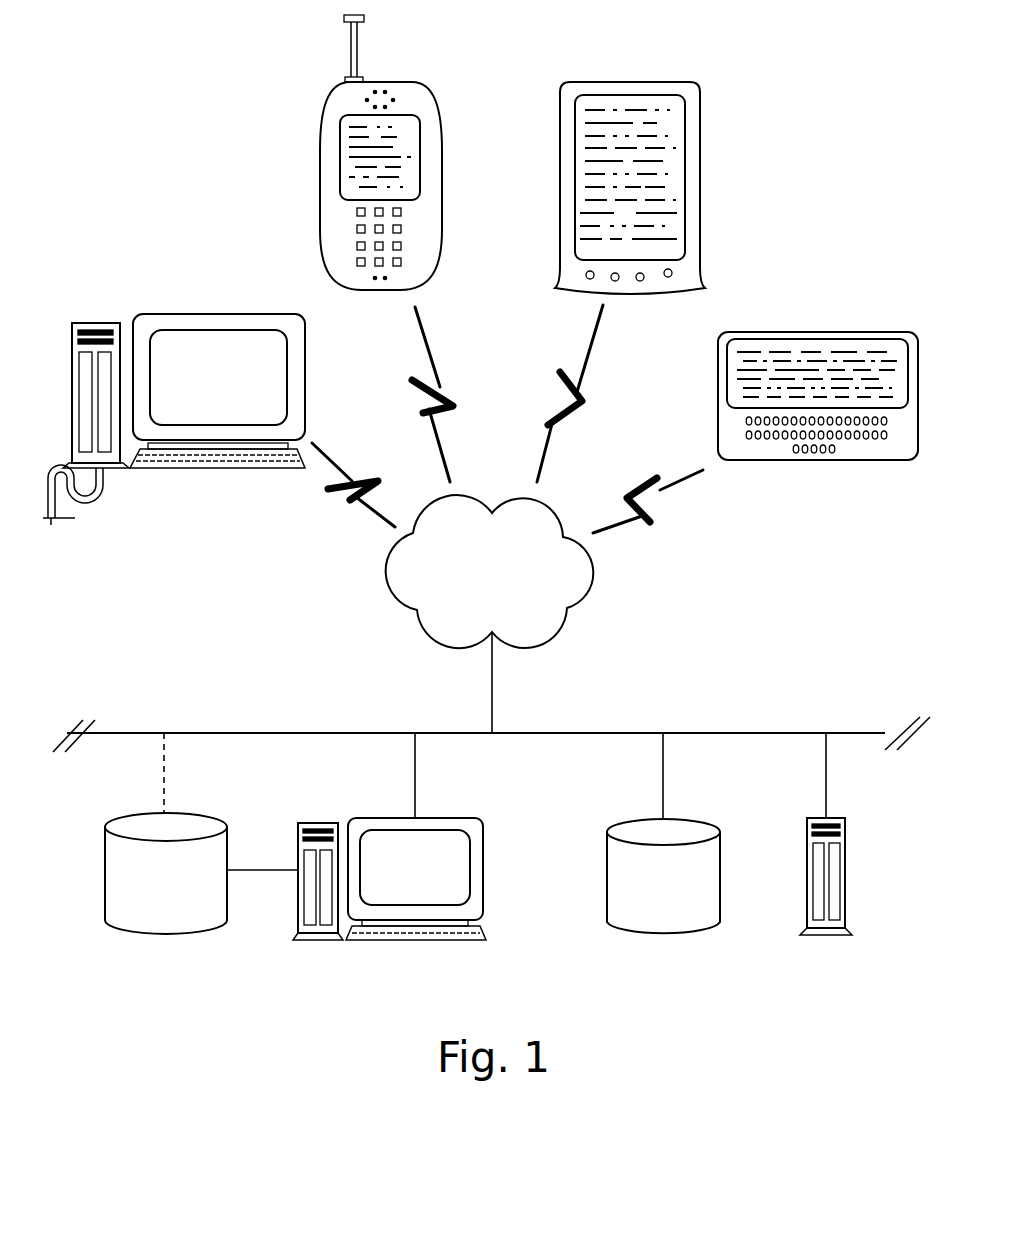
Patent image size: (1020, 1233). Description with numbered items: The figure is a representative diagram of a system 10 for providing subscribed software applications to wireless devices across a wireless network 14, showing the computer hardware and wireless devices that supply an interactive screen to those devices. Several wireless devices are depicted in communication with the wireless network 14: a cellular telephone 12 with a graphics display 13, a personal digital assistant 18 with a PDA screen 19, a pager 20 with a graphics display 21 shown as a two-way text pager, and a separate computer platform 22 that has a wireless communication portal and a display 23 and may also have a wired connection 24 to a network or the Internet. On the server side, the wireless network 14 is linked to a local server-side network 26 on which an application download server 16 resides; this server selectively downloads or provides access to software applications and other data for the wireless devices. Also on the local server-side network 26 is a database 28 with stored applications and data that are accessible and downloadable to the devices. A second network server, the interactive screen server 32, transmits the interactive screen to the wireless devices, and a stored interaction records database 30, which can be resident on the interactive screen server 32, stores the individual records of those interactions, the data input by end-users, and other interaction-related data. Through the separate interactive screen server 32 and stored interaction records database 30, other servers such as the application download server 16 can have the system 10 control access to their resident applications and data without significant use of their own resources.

The system 10 is at (821, 163).
The cellular telephone 12 is at (383, 152).
The graphics display 13 is at (332, 160).
The wireless network 14 is at (596, 571).
The application download server 16 is at (388, 818).
The personal digital assistant 18 is at (607, 166).
The PDA screen 19 is at (565, 160).
The pager 20 is at (818, 391).
The graphics display 21 is at (815, 350).
The computer platform 22 is at (174, 415).
The display 23 is at (178, 335).
The wired connection 24 is at (113, 510).
The local server-side network 26 is at (710, 733).
The database with stored applications and data 28 is at (105, 872).
The stored interaction records database 30 is at (607, 876).
The interactive screen server 32 is at (845, 855).